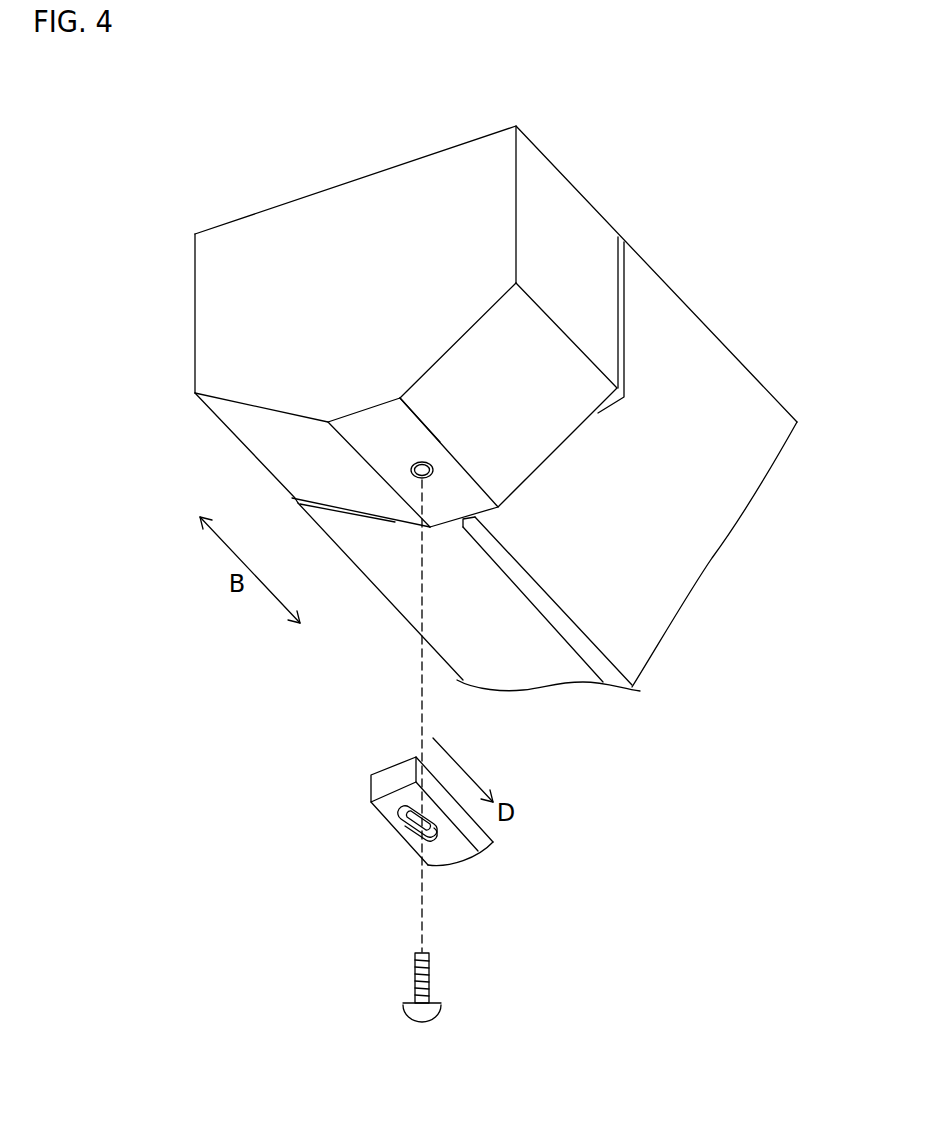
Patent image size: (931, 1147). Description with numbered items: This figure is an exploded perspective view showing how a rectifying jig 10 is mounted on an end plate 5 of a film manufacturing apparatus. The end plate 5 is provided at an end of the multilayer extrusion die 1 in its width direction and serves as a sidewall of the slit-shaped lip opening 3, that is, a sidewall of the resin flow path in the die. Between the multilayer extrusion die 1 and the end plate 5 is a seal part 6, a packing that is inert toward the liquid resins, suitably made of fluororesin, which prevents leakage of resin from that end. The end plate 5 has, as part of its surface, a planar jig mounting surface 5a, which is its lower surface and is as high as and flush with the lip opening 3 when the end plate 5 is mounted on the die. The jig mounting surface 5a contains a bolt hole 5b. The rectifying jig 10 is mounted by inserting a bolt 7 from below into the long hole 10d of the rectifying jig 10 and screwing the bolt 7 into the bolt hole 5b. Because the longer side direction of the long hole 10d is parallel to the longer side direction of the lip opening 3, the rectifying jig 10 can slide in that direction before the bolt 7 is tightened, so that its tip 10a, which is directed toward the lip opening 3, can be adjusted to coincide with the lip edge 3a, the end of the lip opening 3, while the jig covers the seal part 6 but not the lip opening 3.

The multilayer extrusion die 1 is at (695, 318).
The lip opening 3 is at (577, 643).
The lip edge 3a is at (466, 522).
The end plate 5 is at (582, 196).
The jig mounting surface 5a is at (388, 448).
The bolt hole 5b is at (418, 480).
The seal part 6 is at (624, 237).
The bolt 7 is at (421, 1024).
The rectifying jig 10 is at (372, 774).
The tip 10a is at (487, 853).
The long hole 10d is at (407, 826).